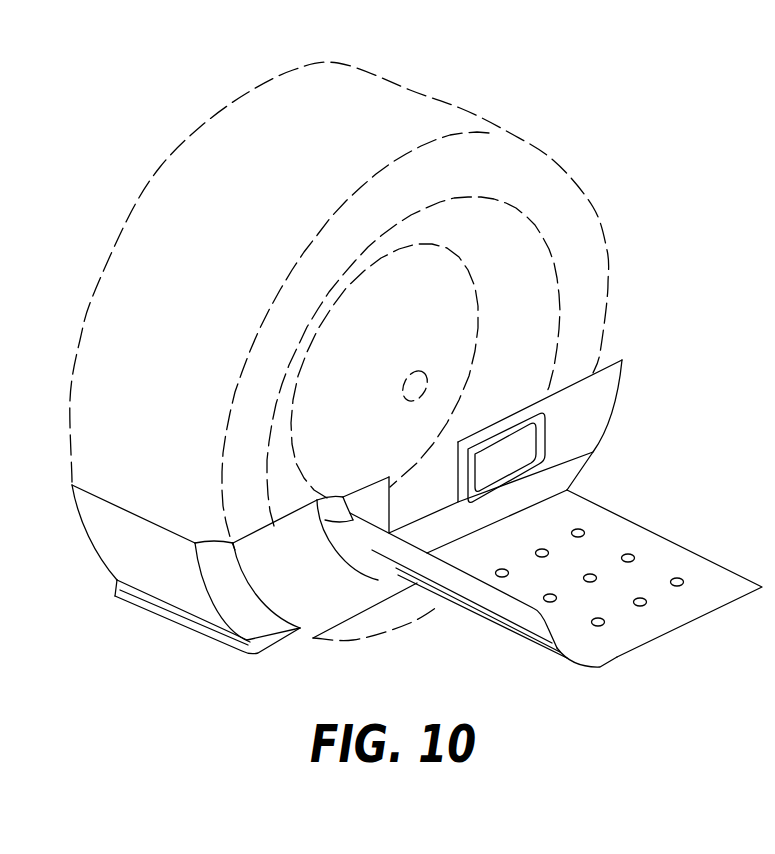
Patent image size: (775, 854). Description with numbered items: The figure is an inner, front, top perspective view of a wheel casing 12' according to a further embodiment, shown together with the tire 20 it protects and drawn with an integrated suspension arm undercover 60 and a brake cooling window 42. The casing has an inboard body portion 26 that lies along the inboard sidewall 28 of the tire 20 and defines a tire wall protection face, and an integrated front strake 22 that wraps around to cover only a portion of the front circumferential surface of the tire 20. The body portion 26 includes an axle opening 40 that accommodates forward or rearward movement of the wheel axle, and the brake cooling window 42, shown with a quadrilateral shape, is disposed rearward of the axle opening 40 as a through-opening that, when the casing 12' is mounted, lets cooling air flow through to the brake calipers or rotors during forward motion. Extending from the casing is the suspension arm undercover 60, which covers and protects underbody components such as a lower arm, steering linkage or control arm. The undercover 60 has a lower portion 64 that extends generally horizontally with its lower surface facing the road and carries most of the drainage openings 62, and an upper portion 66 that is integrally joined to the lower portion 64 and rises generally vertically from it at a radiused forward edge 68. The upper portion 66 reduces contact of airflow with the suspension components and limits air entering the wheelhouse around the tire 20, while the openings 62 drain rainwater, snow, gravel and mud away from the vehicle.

The wheel casing 12' is at (384, 496).
The tire 20 is at (462, 108).
The front strake 22 is at (112, 538).
The body portion 26 is at (593, 411).
The inboard sidewall 28 is at (570, 210).
The axle opening 40 is at (418, 488).
The brake cooling window 42 is at (502, 443).
The suspension arm undercover 60 is at (587, 652).
The openings 62 is at (642, 600).
The lower portion 64 is at (725, 583).
The upper portion 66 is at (493, 598).
The forward edge 68 is at (533, 643).